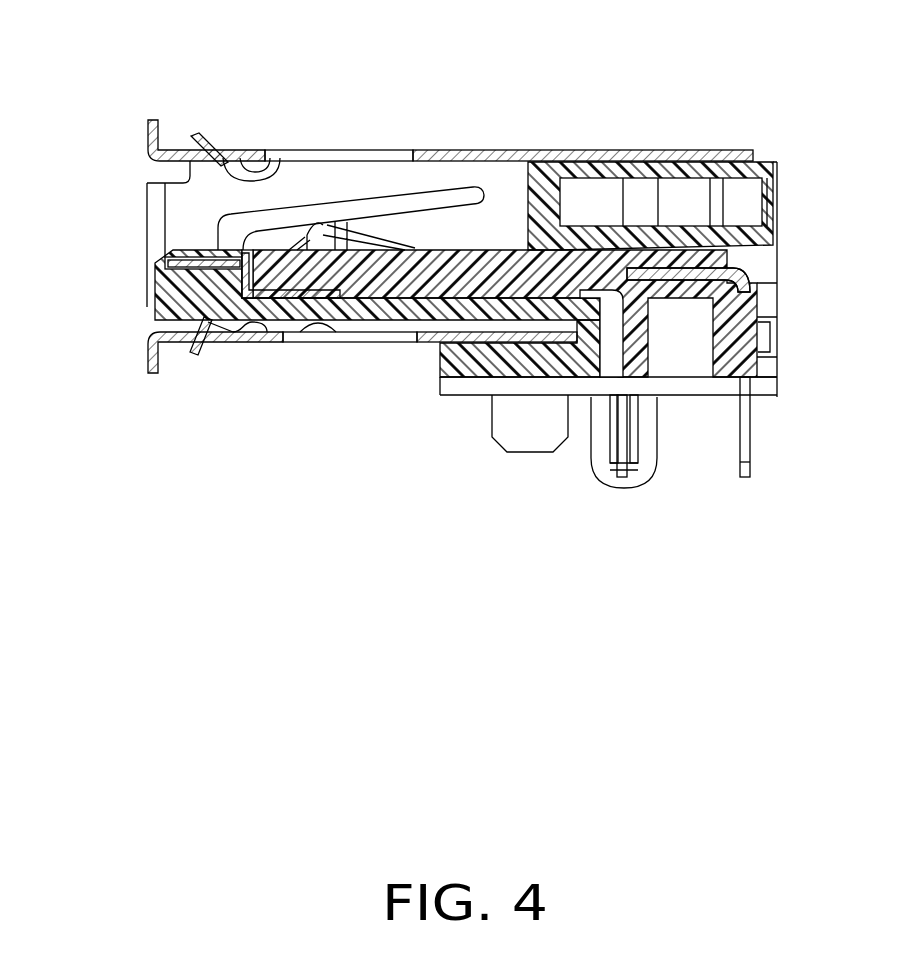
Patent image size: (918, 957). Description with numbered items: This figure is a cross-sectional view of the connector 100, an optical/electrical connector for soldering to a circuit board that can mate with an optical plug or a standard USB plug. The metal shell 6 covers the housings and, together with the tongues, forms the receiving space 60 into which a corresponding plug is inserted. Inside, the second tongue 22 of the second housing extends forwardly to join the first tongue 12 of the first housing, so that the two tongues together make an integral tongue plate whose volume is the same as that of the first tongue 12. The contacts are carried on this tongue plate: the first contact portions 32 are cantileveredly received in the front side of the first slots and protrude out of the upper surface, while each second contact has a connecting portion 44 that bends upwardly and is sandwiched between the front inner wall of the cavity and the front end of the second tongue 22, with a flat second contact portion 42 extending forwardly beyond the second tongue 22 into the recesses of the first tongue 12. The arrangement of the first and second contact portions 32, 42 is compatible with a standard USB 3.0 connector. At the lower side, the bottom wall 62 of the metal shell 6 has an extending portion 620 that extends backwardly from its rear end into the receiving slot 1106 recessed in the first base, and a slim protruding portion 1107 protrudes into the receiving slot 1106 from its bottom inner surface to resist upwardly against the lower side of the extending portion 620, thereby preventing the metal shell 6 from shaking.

The connector 100 is at (453, 88).
The metal shell 6 is at (153, 210).
The second contact portion 42 is at (250, 280).
The connecting portion 44 is at (172, 308).
The second tongue 22 is at (466, 275).
The receiving space 60 is at (367, 232).
The first contact portion 32 is at (327, 222).
The first tongue 12 is at (320, 308).
The bottom wall 62 is at (443, 352).
The extending portion 620 is at (494, 388).
The slim protruding portion 1107 is at (531, 340).
The receiving slot 1106 is at (550, 343).